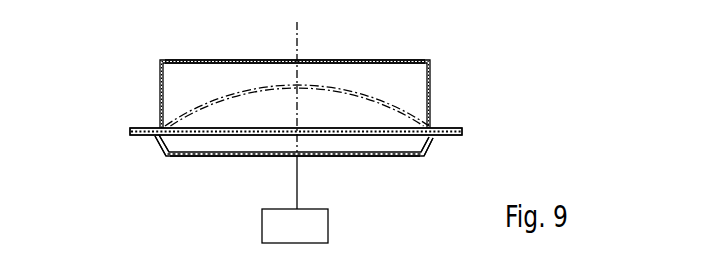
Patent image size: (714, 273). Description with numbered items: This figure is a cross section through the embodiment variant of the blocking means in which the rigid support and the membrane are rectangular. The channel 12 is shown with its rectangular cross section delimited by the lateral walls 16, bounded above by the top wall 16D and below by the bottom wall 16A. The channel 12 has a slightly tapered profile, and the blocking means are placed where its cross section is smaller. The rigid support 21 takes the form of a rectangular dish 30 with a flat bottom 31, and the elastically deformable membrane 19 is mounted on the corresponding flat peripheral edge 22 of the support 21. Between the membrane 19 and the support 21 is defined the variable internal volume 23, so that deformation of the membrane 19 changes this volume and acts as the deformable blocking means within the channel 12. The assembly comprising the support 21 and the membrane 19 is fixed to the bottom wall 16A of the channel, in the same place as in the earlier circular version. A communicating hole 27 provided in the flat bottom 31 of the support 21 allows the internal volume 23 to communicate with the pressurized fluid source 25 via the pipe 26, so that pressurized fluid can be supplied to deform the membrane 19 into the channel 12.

The lateral walls 16 is at (248, 57).
The top wall of the channel 16D is at (370, 60).
The bottom wall of the channel 16A is at (447, 128).
The channel 12 is at (410, 95).
The elastically deformable membrane 19 is at (211, 127).
The flat peripheral edge 22 is at (447, 135).
The internal volume 23 is at (184, 146).
The rectangular dish 30 is at (162, 147).
The flat bottom 31 is at (201, 157).
The rigid support 21 is at (426, 165).
The communicating hole 27 is at (298, 158).
The pipe 26 is at (296, 174).
The pressurized fluid source 25 is at (328, 231).